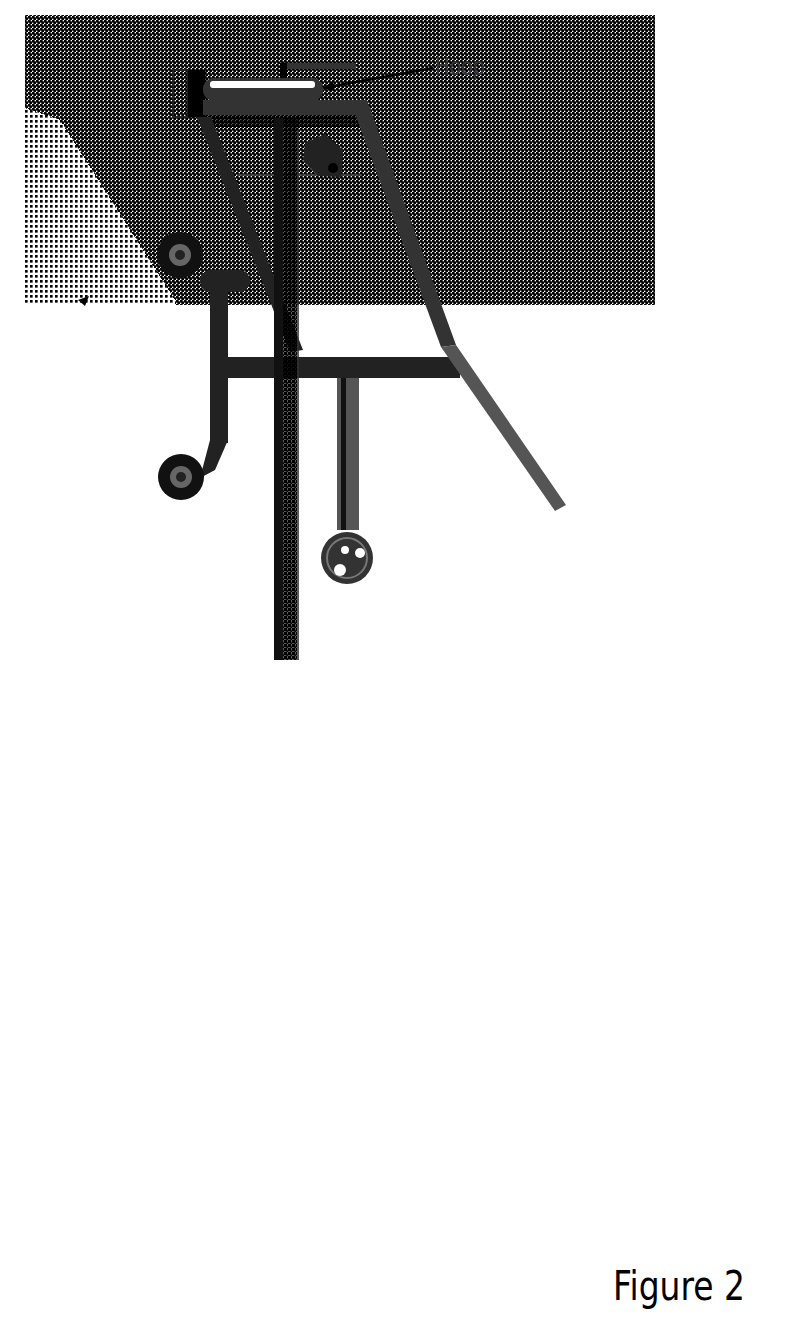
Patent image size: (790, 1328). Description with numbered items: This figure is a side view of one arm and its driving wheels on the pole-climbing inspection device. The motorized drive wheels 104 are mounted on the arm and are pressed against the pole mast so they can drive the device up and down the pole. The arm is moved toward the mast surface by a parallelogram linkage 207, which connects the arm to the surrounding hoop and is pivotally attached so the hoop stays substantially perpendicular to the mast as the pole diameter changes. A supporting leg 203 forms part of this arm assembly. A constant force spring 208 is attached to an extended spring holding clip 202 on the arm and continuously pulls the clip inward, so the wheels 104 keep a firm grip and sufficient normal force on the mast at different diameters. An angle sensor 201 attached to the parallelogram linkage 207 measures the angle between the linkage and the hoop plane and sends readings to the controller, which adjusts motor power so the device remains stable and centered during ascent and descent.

The motor and wheels 104 is at (155, 250).
The angle sensor 201 is at (322, 150).
The parallelogram linkage 207 is at (418, 230).
The supporting leg 203 is at (302, 322).
The extended spring holding clip 202 is at (537, 428).
The constant force spring 208 is at (380, 562).